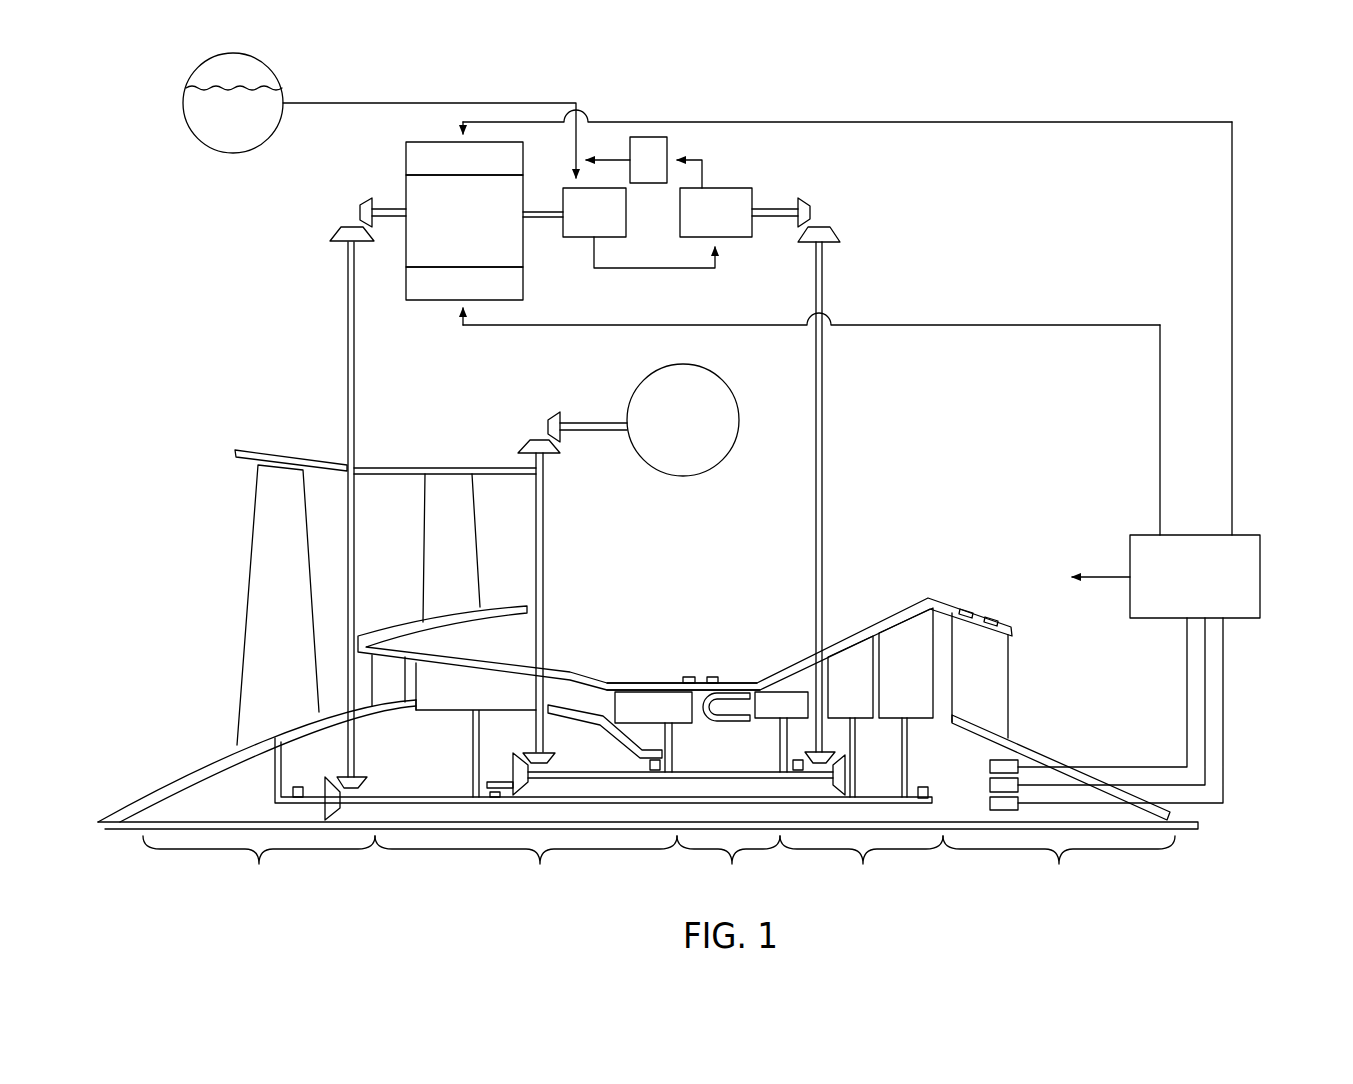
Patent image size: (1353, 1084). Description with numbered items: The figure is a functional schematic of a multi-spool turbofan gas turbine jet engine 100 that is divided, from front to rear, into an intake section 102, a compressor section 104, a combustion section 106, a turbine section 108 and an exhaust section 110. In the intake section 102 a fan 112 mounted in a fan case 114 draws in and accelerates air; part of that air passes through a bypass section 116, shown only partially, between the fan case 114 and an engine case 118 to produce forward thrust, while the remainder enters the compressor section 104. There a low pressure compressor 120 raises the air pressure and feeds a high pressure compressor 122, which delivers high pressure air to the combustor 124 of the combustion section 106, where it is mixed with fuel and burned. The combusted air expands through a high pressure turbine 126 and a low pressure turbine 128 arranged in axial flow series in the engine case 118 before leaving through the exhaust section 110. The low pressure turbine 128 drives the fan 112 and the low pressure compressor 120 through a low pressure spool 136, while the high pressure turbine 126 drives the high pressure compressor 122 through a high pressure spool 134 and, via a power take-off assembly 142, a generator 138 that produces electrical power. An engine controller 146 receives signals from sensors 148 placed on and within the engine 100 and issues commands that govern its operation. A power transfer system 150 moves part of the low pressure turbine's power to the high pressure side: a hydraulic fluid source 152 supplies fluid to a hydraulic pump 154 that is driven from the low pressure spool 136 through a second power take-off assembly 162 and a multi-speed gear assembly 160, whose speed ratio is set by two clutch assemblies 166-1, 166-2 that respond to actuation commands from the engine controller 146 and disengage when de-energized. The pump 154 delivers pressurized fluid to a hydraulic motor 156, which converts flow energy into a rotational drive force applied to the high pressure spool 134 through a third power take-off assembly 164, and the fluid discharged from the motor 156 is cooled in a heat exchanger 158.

The multi-spool turbofan gas turbine jet engine 100 is at (160, 768).
The intake section 102 is at (259, 864).
The compressor section 104 is at (526, 864).
The combustion section 106 is at (728, 864).
The turbine section 108 is at (861, 864).
The exhaust section 110 is at (1059, 864).
The fan 112 is at (262, 537).
The fan case 114 is at (270, 455).
The bypass section 116 is at (405, 543).
The engine case 118 is at (579, 678).
The low pressure compressor 120 is at (492, 688).
The high pressure compressor 122 is at (632, 700).
The combustor 124 is at (722, 700).
The high pressure turbine 126 is at (796, 688).
The low pressure turbine 128 is at (848, 660).
The high pressure spool 134 is at (748, 768).
The low pressure spool 136 is at (410, 797).
The generator 138 is at (740, 419).
The power take-off assembly 142 is at (566, 545).
The engine controller 146 is at (1262, 577).
The sensors 148 is at (993, 817).
The power transfer system 150 is at (778, 108).
The hydraulic fluid source 152 is at (185, 98).
The hydraulic pump 154 is at (567, 238).
The hydraulic motor 156 is at (745, 238).
The heat exchanger 158 is at (667, 150).
The multi-speed gear assembly 160 is at (406, 190).
The second power take-off assembly 162 is at (312, 343).
The third power take-off assembly 164 is at (850, 397).
The clutch assembly 166-1 is at (406, 152).
The clutch assembly 166-2 is at (413, 301).